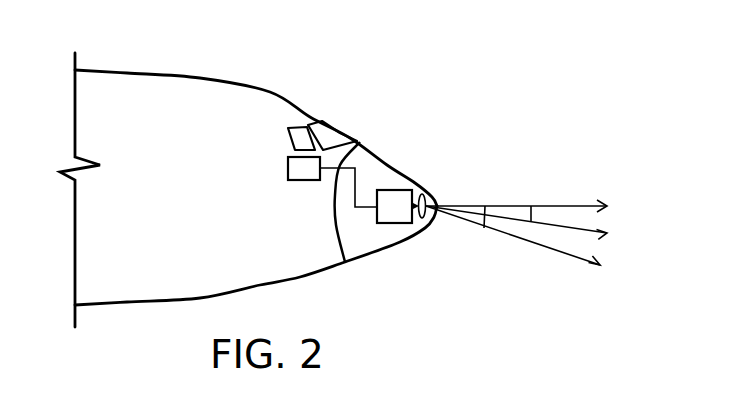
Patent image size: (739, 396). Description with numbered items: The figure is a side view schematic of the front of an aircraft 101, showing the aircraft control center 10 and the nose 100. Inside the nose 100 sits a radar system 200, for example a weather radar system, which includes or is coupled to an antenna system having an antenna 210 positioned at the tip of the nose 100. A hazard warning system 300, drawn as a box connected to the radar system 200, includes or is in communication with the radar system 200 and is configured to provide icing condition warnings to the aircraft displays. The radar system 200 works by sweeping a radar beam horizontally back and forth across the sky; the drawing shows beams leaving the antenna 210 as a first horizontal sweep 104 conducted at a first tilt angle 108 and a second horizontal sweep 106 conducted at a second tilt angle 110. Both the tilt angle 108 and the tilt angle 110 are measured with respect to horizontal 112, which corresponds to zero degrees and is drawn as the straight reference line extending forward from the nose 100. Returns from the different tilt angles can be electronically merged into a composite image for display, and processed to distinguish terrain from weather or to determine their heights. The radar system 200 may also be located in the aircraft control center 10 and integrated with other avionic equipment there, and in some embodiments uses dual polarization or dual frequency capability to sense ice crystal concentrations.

The aircraft control center 10 is at (272, 91).
The nose 100 is at (387, 165).
The aircraft 101 is at (462, 72).
The first horizontal sweep 104 is at (588, 227).
The second horizontal sweep 106 is at (560, 252).
The tilt angle 108 is at (531, 214).
The tilt angle 110 is at (484, 218).
The horizontal 112 is at (567, 206).
The radar system 200 is at (397, 223).
The antenna 210 is at (425, 194).
The hazard warning system 300 is at (303, 176).